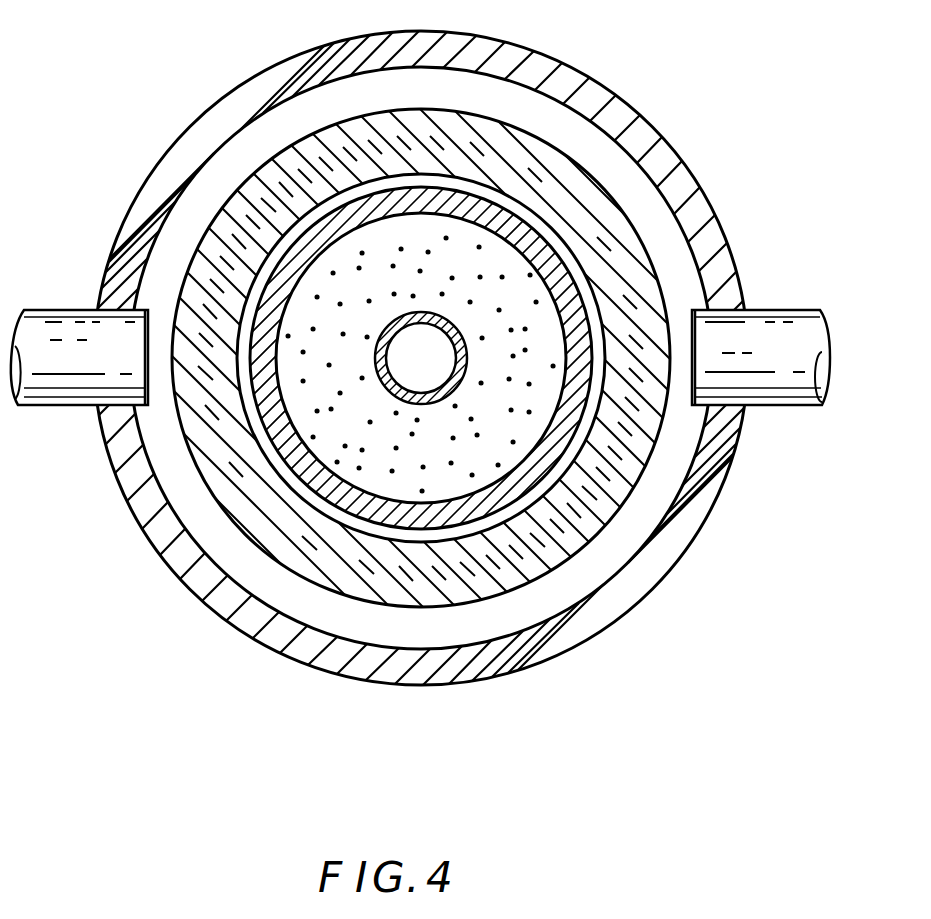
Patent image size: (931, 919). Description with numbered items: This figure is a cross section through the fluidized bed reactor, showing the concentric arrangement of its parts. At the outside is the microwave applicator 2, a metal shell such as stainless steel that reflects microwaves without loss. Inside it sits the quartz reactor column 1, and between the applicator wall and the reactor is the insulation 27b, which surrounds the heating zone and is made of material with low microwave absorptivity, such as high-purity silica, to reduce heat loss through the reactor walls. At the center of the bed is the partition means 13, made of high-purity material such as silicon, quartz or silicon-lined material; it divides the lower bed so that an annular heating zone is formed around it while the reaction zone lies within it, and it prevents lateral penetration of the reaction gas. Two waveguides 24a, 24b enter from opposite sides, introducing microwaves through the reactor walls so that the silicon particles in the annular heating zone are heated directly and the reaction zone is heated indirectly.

The microwave applicator 2 is at (546, 54).
The insulation 27b is at (587, 183).
The quartz reactor column 1 is at (577, 292).
The partition means 13 is at (458, 383).
The waveguide 24a is at (73, 317).
The waveguide 24b is at (762, 388).